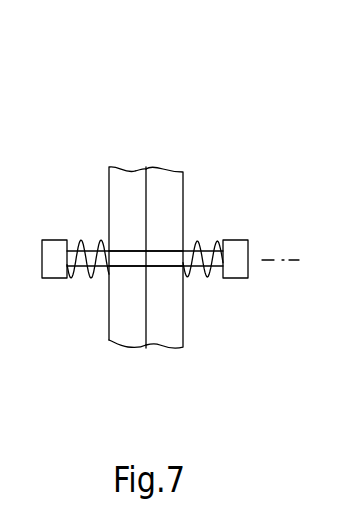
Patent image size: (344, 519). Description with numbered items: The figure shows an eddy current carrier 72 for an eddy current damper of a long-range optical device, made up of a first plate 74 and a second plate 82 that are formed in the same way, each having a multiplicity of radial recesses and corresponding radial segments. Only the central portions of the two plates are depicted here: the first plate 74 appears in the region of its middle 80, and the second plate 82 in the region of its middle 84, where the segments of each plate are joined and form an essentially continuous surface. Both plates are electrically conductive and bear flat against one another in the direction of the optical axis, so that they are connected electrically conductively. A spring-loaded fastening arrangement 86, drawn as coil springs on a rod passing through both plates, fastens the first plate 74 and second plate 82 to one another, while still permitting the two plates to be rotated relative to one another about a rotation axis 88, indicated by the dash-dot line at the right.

The eddy current carrier 72 is at (152, 110).
The first plate 74 is at (165, 188).
The middle of the first plate 80 is at (165, 223).
The second plate 82 is at (120, 185).
The middle of the second plate 84 is at (120, 222).
The spring-loaded fastening arrangement 86 is at (88, 248).
The rotation axis 88 is at (268, 261).